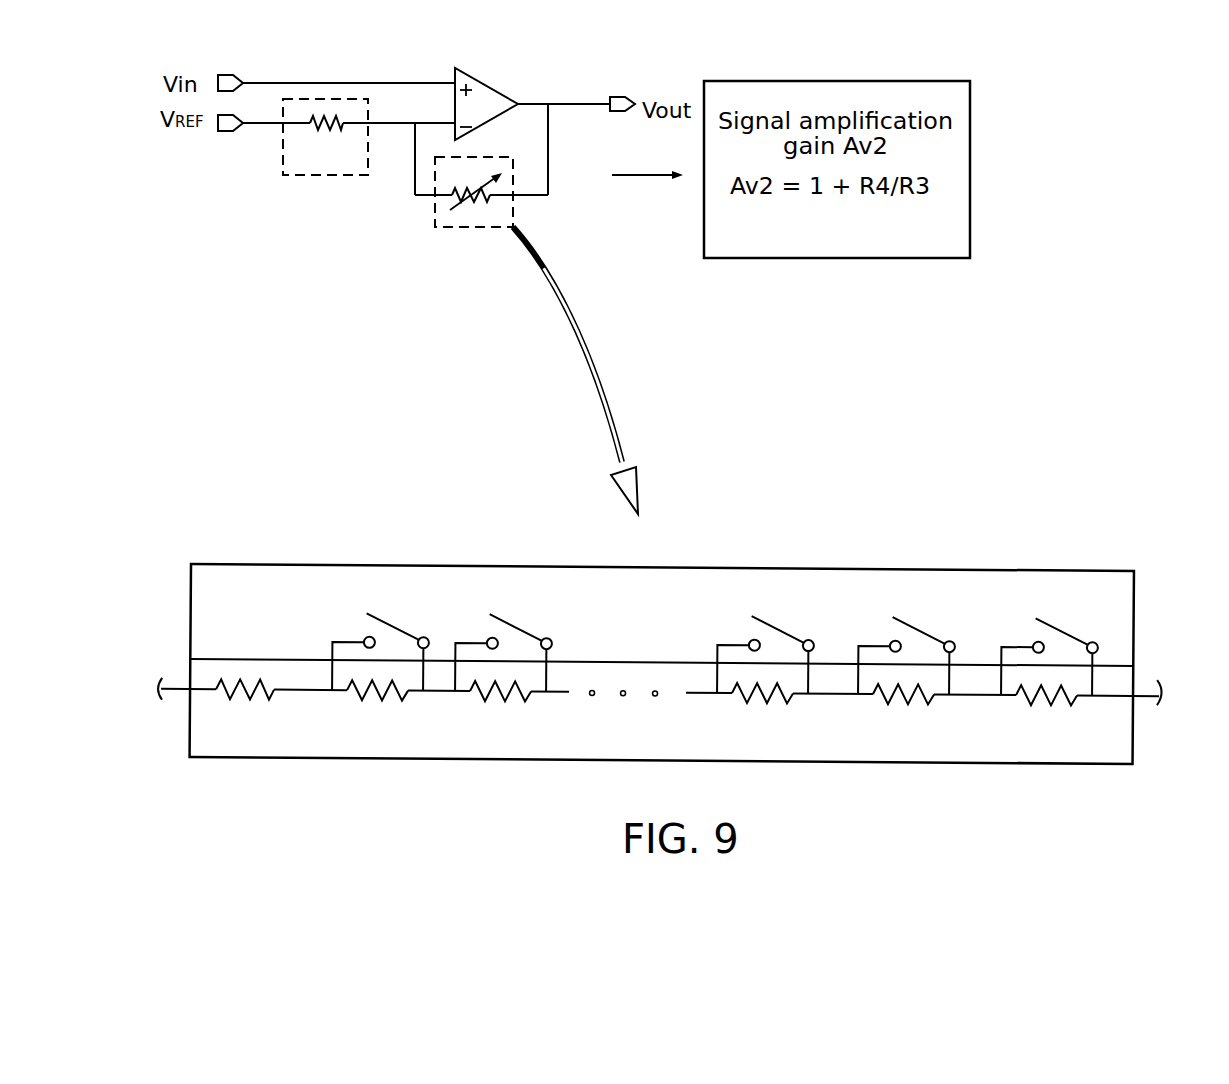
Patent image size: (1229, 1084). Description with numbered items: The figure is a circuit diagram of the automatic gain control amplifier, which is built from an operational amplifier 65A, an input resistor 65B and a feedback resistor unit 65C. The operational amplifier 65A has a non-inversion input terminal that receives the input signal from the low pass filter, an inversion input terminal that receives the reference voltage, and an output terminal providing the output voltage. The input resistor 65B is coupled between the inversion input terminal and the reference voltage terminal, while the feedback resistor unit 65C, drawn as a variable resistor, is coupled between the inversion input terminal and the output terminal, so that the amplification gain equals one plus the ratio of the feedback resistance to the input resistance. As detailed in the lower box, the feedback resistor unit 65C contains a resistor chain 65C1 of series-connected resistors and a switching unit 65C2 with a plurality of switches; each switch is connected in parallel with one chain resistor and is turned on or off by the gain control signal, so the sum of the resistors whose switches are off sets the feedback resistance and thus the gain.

The operational amplifier 65A is at (487, 82).
The input resistor 65B is at (337, 176).
The feedback resistor unit 65C is at (452, 228).
The resistor chain 65C1 is at (1134, 715).
The switching unit 65C2 is at (1134, 606).